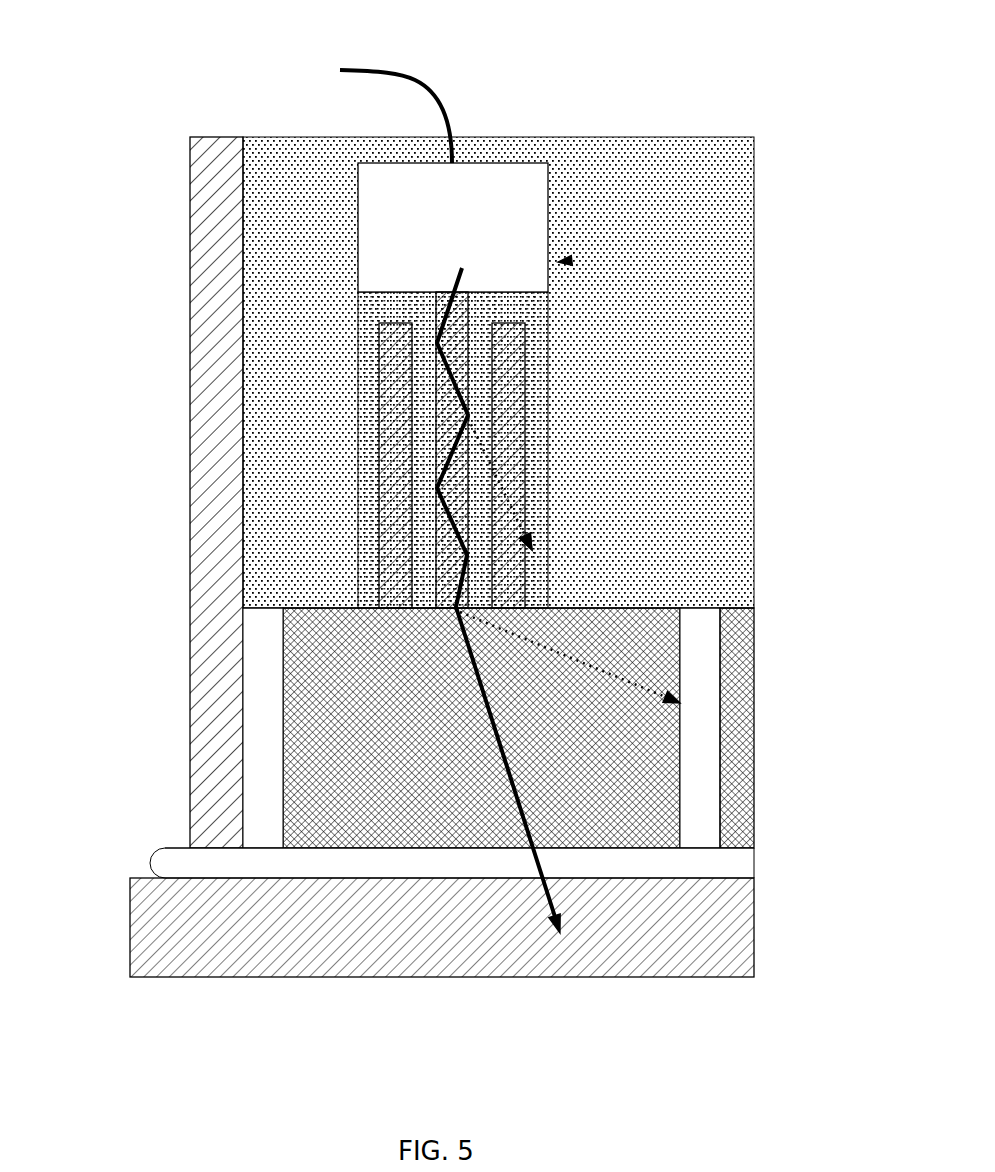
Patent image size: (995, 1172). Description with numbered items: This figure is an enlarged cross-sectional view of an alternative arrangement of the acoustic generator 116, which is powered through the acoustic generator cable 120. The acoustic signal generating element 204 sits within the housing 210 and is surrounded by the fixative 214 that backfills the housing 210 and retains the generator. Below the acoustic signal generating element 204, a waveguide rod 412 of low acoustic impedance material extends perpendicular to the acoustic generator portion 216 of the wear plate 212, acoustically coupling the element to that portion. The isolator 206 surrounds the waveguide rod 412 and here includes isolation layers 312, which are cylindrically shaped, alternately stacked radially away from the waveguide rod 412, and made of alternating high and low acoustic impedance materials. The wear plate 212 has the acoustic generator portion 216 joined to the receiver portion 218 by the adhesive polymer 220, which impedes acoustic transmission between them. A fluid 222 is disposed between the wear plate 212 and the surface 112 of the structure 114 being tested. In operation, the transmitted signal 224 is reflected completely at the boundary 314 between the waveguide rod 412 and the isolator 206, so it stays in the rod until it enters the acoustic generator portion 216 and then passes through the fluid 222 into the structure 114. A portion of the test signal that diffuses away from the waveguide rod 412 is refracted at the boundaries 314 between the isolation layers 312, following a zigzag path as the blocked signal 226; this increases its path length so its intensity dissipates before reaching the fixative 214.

The acoustic generator cable 120 is at (402, 72).
The acoustic generator 116 is at (566, 261).
The housing 210 is at (217, 375).
The acoustic signal generating element 204 is at (435, 237).
The fixative 214 is at (698, 320).
The isolator 206 is at (535, 325).
The waveguide rod 412 is at (525, 400).
The isolation layers 312 is at (434, 450).
The boundaries 314 is at (434, 508).
The blocked signals 226 is at (525, 437).
The transmitted signal 224 is at (523, 515).
The wear plate 212 is at (607, 610).
The adhesive polymer 220 is at (263, 728).
The receiver portion 218 is at (743, 733).
The acoustic generator portion 216 is at (482, 756).
The fluid 222 is at (177, 863).
The surface 112 is at (147, 878).
The structure 114 is at (130, 898).